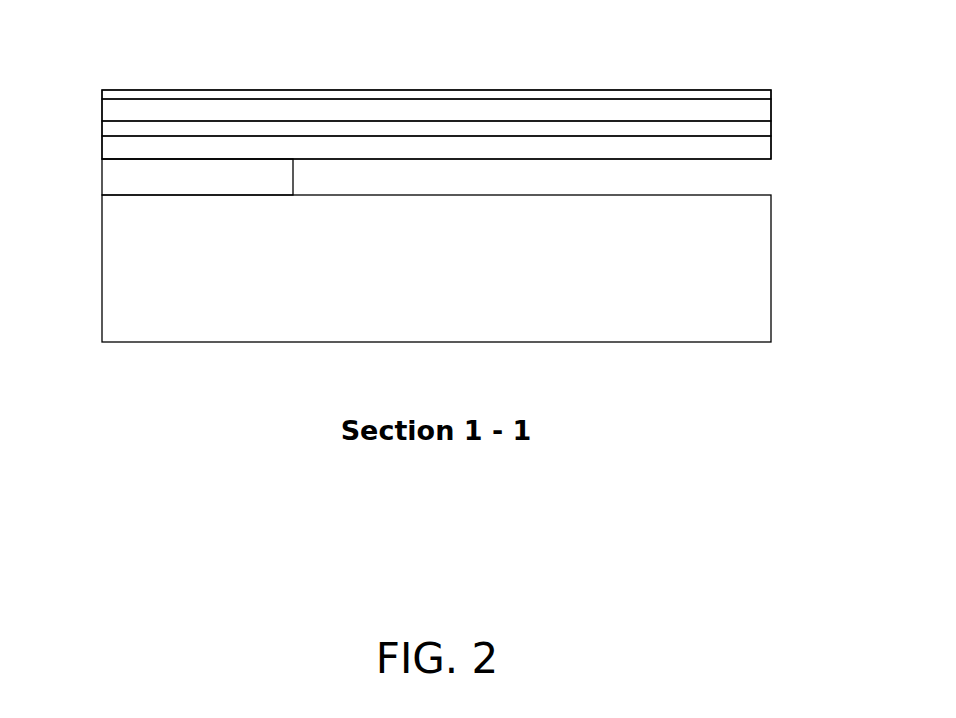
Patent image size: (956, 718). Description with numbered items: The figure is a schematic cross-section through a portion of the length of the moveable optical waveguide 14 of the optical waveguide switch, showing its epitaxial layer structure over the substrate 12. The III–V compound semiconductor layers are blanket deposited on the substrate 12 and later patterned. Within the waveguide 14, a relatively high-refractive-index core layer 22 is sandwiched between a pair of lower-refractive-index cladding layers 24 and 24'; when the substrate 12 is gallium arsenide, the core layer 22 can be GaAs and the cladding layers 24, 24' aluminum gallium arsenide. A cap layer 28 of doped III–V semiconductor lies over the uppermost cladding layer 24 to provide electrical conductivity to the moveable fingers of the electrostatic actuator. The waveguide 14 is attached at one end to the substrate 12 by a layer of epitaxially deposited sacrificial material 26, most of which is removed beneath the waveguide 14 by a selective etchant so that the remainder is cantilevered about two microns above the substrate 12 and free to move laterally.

The substrate 12 is at (167, 302).
The moveable optical waveguide 14 is at (511, 77).
The core layer 22 is at (771, 129).
The cladding layer 24 is at (468, 152).
The cladding layer 24' is at (471, 106).
The sacrificial material 26 is at (102, 177).
The cap layer 28 is at (102, 93).